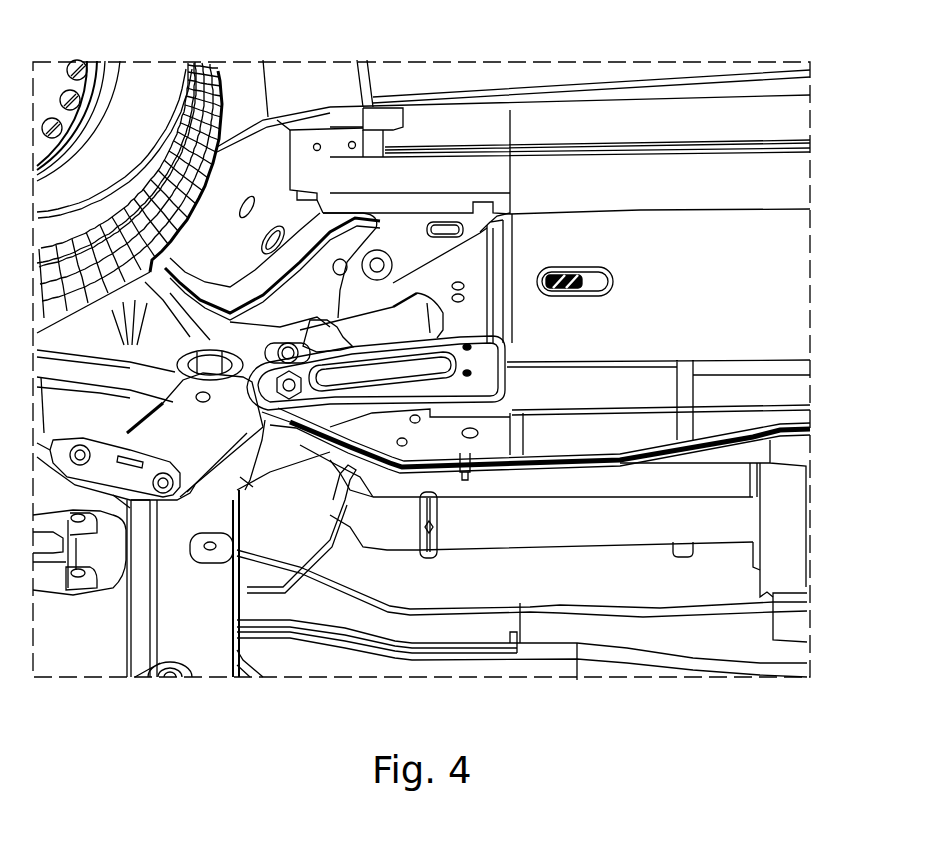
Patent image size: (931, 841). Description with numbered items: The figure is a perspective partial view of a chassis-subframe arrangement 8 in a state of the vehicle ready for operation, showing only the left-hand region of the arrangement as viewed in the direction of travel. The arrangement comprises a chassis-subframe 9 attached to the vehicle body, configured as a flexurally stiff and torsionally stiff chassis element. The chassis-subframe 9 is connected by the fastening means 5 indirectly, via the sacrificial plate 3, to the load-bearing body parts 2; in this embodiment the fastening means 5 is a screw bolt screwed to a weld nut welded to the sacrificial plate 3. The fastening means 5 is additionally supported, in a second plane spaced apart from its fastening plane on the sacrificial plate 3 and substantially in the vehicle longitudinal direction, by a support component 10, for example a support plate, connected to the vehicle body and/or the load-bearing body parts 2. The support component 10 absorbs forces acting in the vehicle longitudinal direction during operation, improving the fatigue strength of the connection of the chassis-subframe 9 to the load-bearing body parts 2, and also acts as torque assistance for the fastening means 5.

The load-bearing body parts 2 is at (420, 250).
The sacrificial plate 3 is at (343, 345).
The fastening means 5 is at (297, 395).
The chassis-subframe arrangement 8 is at (43, 695).
The chassis-subframe 9 is at (190, 583).
The support component 10 is at (417, 370).